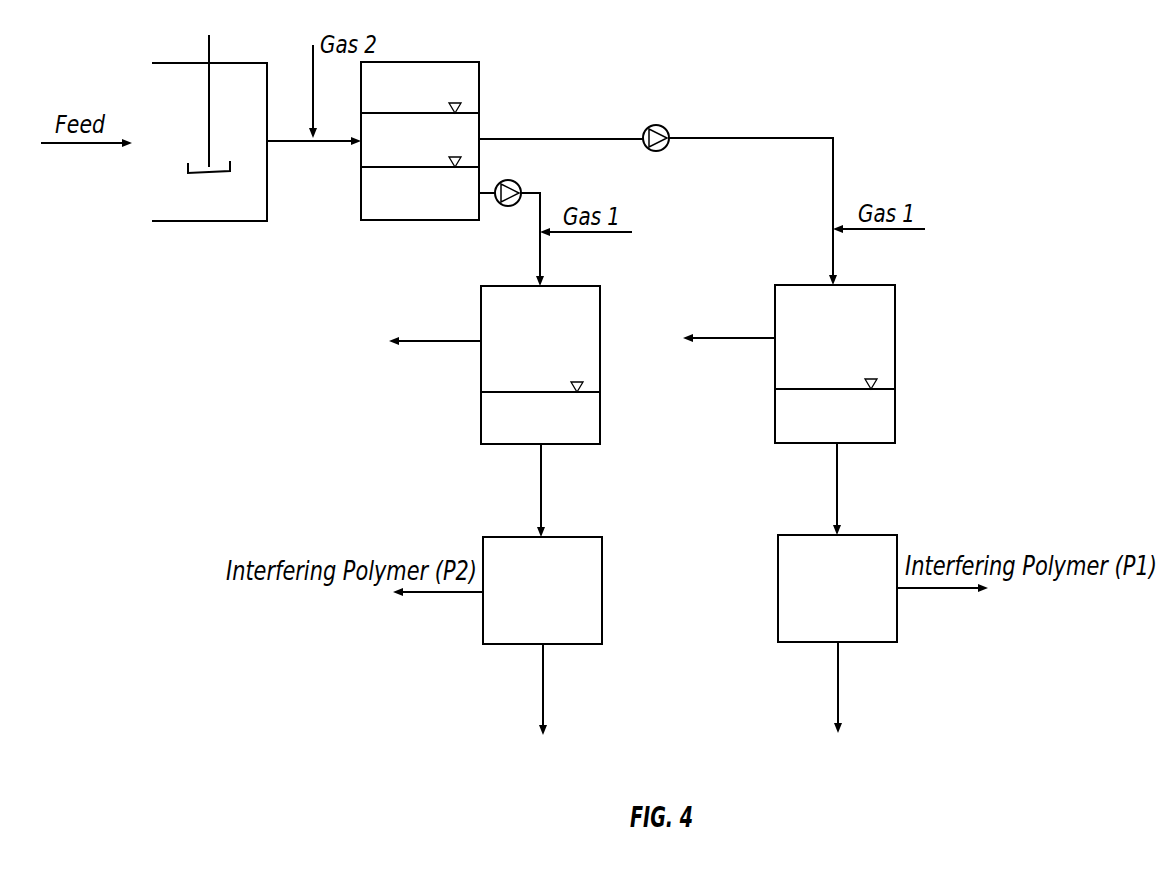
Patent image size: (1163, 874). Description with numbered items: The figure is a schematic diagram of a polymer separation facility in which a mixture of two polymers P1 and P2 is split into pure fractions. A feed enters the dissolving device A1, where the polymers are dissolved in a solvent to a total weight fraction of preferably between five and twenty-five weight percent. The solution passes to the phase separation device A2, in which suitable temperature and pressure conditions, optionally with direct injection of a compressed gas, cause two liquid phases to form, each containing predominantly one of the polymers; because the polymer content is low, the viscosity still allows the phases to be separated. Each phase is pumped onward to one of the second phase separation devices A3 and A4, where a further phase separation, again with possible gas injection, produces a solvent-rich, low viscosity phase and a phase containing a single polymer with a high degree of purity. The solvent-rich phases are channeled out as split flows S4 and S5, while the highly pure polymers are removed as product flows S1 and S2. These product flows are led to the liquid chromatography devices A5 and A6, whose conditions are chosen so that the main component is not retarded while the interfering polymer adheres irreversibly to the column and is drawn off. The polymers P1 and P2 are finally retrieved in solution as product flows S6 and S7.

The dissolving device A1 is at (209, 128).
The phase separation device A2 is at (420, 141).
The second phase separation device A3 is at (540, 365).
The second phase separation device A4 is at (835, 364).
The liquid chromatography device A5 is at (542, 590).
The liquid chromatography device A6 is at (837, 588).
The product flow S1 is at (559, 490).
The product flow S2 is at (854, 489).
The split flow S4 is at (419, 342).
The split flow S5 is at (713, 339).
The product flow S6 is at (562, 689).
The product flow S7 is at (856, 687).
The polymer P1 is at (549, 760).
The polymer P2 is at (843, 757).